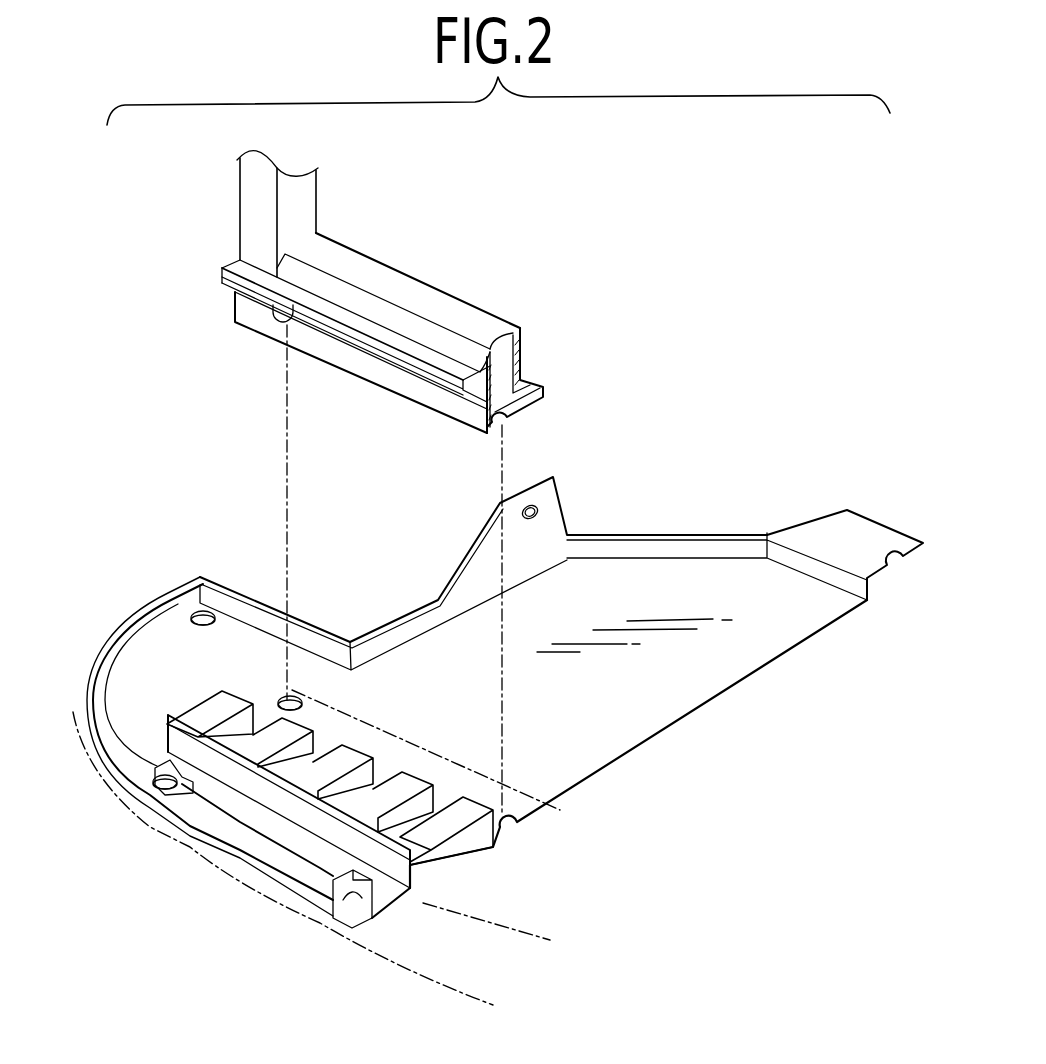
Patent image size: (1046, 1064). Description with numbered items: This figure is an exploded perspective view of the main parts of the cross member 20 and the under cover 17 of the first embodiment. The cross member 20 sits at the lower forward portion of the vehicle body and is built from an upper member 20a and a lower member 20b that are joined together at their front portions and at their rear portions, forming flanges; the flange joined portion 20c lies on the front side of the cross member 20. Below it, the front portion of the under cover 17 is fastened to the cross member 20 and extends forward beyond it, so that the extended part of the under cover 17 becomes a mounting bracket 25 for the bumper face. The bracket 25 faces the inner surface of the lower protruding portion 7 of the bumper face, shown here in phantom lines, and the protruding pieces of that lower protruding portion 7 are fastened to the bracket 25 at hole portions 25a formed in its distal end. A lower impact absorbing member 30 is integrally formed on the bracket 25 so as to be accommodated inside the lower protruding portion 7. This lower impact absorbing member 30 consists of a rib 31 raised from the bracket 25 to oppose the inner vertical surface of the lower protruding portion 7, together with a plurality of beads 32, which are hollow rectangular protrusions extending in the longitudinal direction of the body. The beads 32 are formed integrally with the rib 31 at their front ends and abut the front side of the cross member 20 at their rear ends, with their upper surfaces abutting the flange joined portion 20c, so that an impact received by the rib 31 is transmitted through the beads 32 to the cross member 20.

The cross member 20 is at (452, 250).
The upper member 20a is at (497, 312).
The lower member 20b is at (490, 428).
The flange joined portion 20c is at (390, 364).
The mounting bracket 25 is at (489, 860).
The hole portions 25a is at (157, 772).
The under cover 17 is at (692, 746).
The lower impact absorbing member 30 is at (367, 744).
The rib 31 is at (173, 712).
The beads 32 is at (227, 698).
The lower protruding portion 7 is at (270, 897).